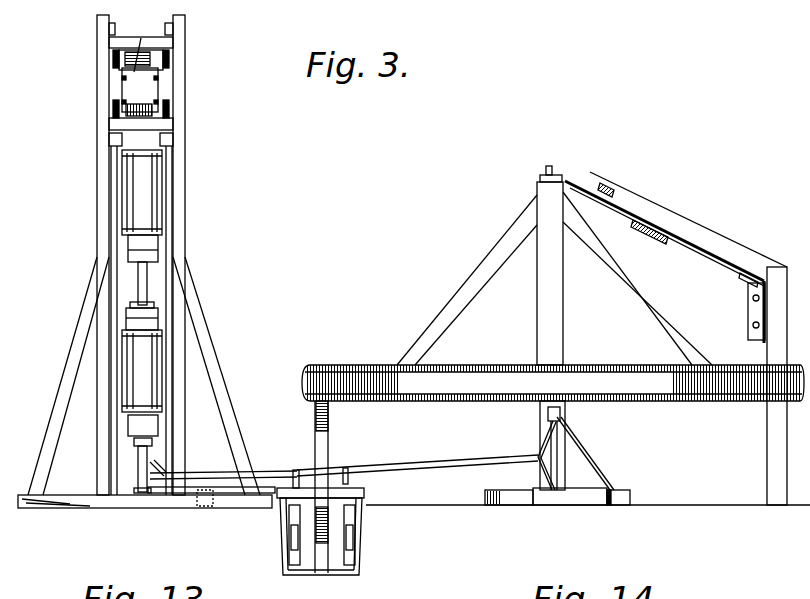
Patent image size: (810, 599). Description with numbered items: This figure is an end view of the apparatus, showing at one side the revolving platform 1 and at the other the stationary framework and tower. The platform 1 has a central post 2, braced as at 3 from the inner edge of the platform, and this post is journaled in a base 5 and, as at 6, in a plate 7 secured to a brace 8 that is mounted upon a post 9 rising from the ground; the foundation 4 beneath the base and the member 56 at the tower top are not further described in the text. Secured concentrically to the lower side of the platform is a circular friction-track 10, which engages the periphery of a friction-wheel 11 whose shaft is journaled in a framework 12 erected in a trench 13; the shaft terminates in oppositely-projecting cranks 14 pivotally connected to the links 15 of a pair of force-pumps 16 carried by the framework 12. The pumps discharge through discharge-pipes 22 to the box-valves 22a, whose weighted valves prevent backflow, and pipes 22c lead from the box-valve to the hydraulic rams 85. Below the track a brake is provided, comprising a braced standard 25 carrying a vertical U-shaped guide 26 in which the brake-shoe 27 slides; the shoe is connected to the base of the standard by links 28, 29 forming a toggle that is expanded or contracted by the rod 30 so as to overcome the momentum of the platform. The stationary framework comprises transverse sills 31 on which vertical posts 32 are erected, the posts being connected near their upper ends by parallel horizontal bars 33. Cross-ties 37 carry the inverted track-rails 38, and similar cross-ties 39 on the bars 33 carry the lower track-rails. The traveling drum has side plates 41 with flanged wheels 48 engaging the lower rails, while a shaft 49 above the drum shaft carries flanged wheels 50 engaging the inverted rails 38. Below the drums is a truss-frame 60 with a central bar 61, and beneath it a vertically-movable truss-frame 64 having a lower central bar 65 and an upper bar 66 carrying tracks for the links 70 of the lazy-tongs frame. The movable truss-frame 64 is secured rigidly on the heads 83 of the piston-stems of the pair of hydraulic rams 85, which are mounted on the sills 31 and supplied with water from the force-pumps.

The revolving platform 1 is at (373, 346).
The central post 2 is at (537, 291).
The braces 3 is at (475, 270).
The base 4 is at (546, 508).
The base 5 is at (630, 496).
The journal 6 is at (550, 166).
The plate 7 is at (588, 182).
The brace 8 is at (688, 222).
The post 9 is at (746, 292).
The circular friction-track 10 is at (705, 401).
The friction-wheel 11 is at (329, 420).
The framework 12 is at (342, 573).
The trench 13 is at (364, 519).
The cranks 14 is at (295, 477).
The links 15 is at (350, 463).
The force-pumps 16 is at (292, 538).
The discharge-pipes 22 is at (233, 494).
The box-valves 22a is at (200, 507).
The pipes 22c is at (147, 498).
The braced standard 25 is at (565, 457).
The vertical U-shaped guide 26 is at (562, 416).
The brake-shoe 27 is at (548, 418).
The link 28 is at (545, 441).
The link 29 is at (540, 475).
The rod 30 is at (470, 466).
The transverse sills 31 is at (58, 506).
The vertical posts 32 is at (144, 255).
The horizontal bars 33 is at (120, 141).
The cross-ties 37 is at (160, 45).
The inverted track-rails 38 is at (112, 53).
The cross-ties 39 is at (158, 126).
The side plates 41 is at (160, 70).
The flanged wheels 48 is at (112, 109).
The shaft 49 is at (120, 70).
The flanged wheels 50 is at (122, 60).
The shaft 56 is at (139, 42).
The truss-frame 60 is at (145, 182).
The central longitudinally-extending bar 61 is at (150, 245).
The vertically-movable truss-frame 64 is at (145, 382).
The central longitudinally-extending bar 65 is at (150, 425).
The bar 66 is at (128, 332).
The links 70 is at (136, 288).
The heads 83 is at (148, 441).
The hydraulic rams 85 is at (143, 458).